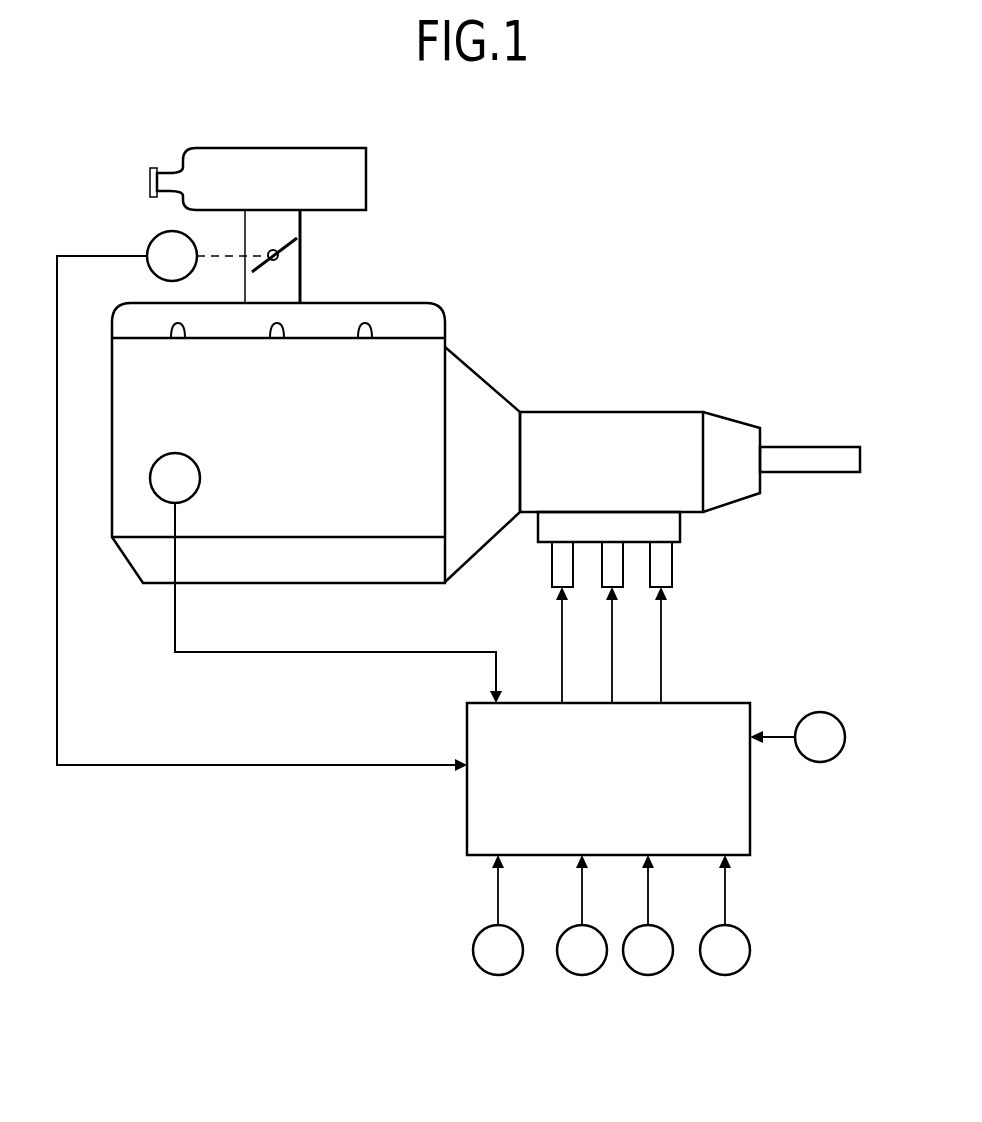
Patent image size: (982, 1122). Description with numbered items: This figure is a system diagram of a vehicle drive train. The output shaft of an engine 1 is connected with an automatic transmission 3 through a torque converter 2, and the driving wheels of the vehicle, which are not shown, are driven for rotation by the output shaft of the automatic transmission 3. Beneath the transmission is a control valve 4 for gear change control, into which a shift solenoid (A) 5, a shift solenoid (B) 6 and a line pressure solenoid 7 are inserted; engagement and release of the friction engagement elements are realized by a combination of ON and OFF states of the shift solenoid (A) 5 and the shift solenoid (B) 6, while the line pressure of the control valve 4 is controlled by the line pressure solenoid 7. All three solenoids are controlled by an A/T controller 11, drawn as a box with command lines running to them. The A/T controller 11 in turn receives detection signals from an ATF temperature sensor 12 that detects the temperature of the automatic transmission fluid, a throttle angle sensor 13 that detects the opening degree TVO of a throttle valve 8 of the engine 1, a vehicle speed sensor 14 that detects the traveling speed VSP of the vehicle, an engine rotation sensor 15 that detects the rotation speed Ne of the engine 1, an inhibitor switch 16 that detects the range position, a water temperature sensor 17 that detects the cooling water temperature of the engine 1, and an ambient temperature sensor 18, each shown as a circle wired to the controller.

The engine 1 is at (325, 337).
The torque converter 2 is at (497, 389).
The automatic transmission 3 is at (645, 411).
The control valve 4 is at (680, 528).
The shift solenoid (A) 5 is at (672, 565).
The shift solenoid (B) 6 is at (623, 562).
The line pressure solenoid 7 is at (573, 563).
The throttle valve 8 is at (300, 256).
The A/T controller 11 is at (467, 833).
The ATF temperature sensor 12 is at (491, 975).
The throttle angle sensor 13 is at (155, 237).
The vehicle speed sensor 14 is at (584, 975).
The engine rotation sensor 15 is at (647, 975).
The inhibitor switch 16 is at (726, 975).
The water temperature sensor 17 is at (198, 462).
The ambient temperature sensor 18 is at (825, 713).